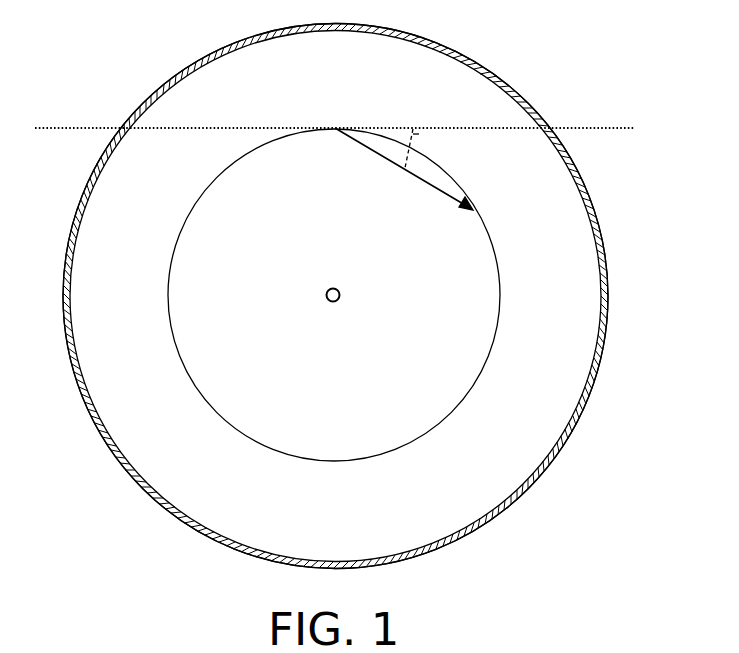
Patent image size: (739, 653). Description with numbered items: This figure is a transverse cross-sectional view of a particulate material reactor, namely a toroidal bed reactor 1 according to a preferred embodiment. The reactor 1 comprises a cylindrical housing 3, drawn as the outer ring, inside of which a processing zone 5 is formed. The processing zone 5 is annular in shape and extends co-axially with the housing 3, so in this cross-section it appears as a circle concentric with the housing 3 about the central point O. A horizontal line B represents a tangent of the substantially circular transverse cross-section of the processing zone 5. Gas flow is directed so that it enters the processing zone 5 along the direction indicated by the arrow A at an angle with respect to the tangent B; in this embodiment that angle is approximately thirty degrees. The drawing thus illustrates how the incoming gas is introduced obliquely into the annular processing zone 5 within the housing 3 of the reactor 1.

The toroidal bed reactor 1 is at (606, 510).
The cylindrical housing 3 is at (184, 522).
The processing zone 5 is at (217, 414).
The center point O is at (333, 295).
The chord / direction arrow A is at (426, 181).
The tangent B is at (598, 128).